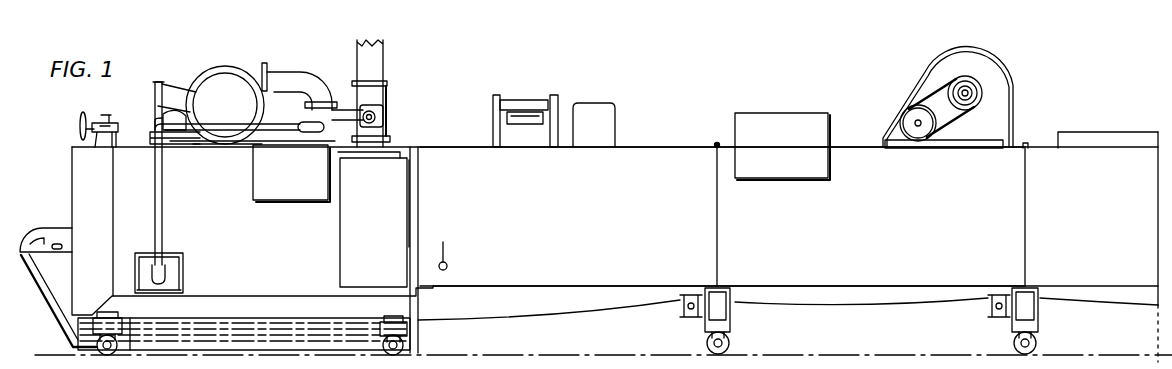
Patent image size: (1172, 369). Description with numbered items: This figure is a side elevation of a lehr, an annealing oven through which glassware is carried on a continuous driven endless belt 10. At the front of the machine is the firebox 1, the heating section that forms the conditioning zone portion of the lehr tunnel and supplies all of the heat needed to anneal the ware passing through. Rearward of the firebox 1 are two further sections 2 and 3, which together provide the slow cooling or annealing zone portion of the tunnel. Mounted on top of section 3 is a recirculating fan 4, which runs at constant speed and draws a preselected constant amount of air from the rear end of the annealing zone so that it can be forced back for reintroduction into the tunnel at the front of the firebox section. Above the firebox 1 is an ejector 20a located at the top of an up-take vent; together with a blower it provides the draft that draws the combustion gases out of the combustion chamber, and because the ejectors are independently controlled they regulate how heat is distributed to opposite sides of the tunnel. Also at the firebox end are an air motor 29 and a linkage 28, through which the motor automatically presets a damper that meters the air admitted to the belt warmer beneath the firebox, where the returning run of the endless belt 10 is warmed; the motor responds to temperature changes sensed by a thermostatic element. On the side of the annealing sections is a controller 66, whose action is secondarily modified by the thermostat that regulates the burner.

The firebox 1 is at (62, 163).
The section 2 is at (658, 145).
The section 3 is at (852, 145).
The recirculating fan 4 is at (1011, 80).
The endless belt 10 is at (587, 306).
The ejector 20a is at (380, 120).
The linkage 28 is at (161, 81).
The air motor 29 is at (178, 113).
The controller 66 is at (806, 172).